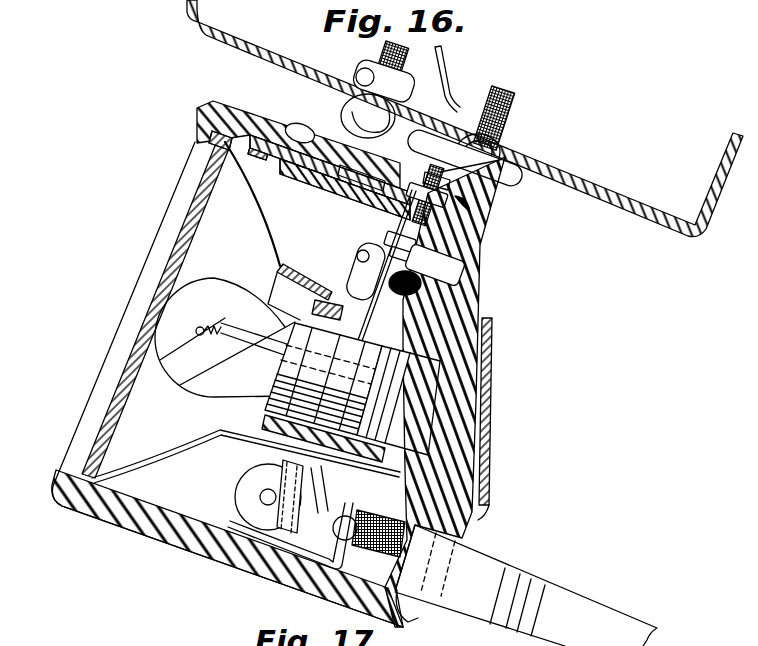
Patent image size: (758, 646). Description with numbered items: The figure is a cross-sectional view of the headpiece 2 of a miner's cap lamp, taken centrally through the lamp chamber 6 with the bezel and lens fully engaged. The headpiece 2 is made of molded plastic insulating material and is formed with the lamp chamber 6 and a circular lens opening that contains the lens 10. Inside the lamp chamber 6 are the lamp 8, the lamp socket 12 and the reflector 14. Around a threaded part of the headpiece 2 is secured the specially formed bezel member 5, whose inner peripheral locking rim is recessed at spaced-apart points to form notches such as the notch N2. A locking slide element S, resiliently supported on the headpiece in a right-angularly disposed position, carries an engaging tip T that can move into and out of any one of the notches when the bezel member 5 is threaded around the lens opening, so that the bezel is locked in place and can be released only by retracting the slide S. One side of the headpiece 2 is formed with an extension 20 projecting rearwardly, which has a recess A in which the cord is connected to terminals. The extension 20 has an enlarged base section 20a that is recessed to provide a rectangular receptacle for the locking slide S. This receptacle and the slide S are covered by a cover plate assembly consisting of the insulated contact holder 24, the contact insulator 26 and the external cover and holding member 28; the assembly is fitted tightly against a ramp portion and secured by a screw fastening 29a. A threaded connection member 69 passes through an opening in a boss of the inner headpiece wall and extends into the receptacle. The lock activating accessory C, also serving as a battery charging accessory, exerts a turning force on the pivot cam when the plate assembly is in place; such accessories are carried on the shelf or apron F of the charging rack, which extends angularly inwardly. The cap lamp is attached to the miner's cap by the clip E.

The shelf or apron F is at (643, 208).
The lock activating accessory C is at (345, 113).
The screw fastening 29a is at (455, 184).
The lens 10 is at (103, 400).
The bezel member 5 is at (75, 512).
The engaging tip T is at (258, 160).
The notch N2 is at (268, 146).
The insulated contact holder 24 is at (310, 163).
The locking slide element S is at (322, 190).
The contact insulator 26 is at (340, 172).
The external cover and holding member 28 is at (372, 178).
The extension 20 is at (462, 461).
The enlarged base section 20a is at (463, 205).
The clip E is at (492, 378).
The headpiece 2 is at (167, 528).
The lamp chamber 6 is at (214, 514).
The reflector 14 is at (278, 238).
The lamp 8 is at (217, 278).
The lamp socket 12 is at (443, 412).
The threaded connection member 69 is at (335, 527).
The recess A is at (417, 617).